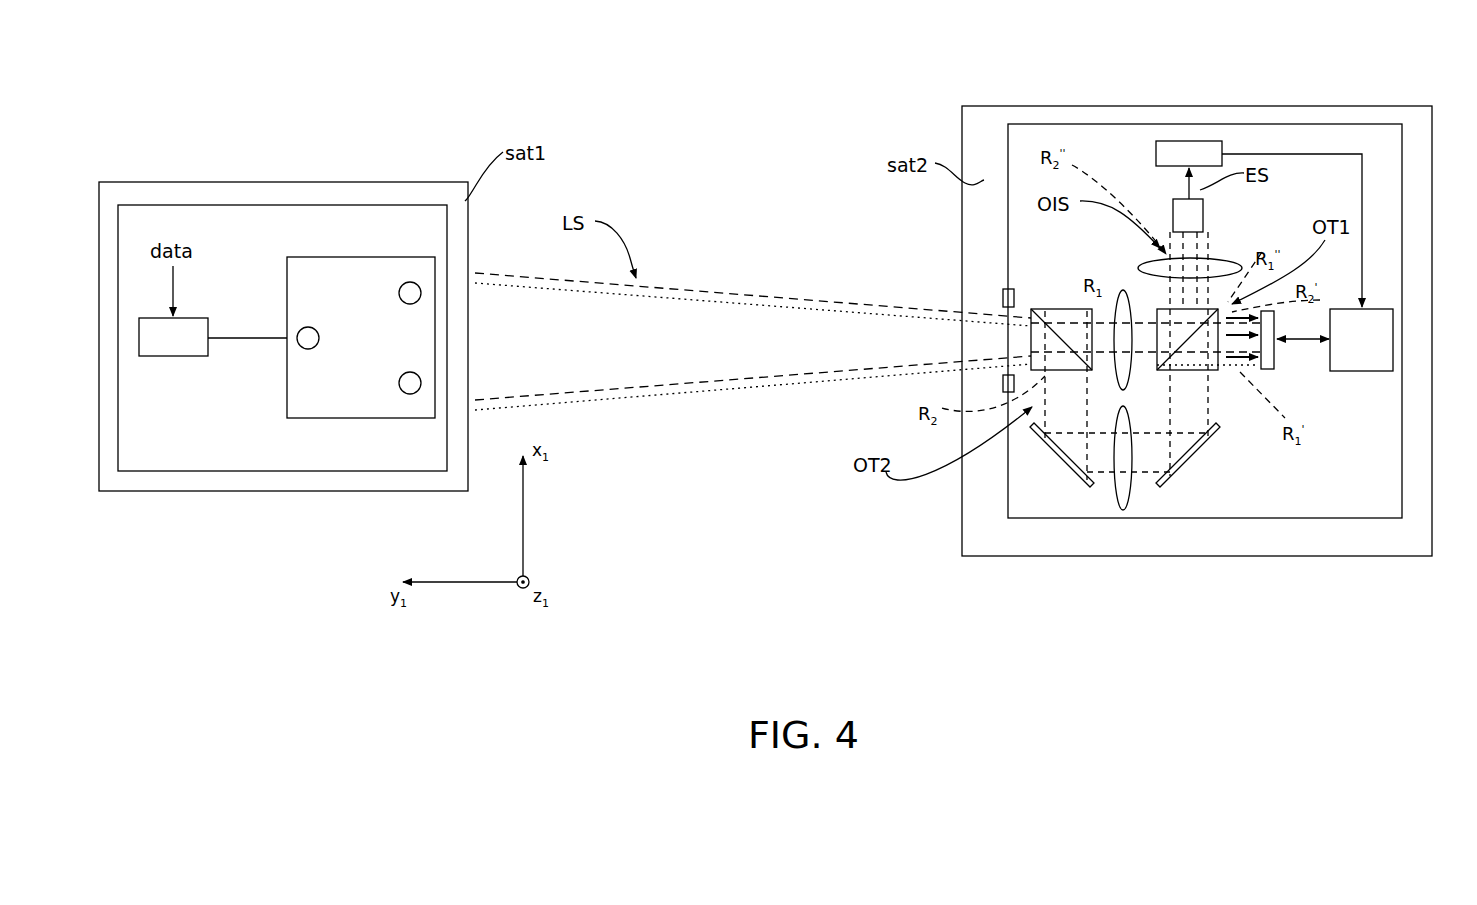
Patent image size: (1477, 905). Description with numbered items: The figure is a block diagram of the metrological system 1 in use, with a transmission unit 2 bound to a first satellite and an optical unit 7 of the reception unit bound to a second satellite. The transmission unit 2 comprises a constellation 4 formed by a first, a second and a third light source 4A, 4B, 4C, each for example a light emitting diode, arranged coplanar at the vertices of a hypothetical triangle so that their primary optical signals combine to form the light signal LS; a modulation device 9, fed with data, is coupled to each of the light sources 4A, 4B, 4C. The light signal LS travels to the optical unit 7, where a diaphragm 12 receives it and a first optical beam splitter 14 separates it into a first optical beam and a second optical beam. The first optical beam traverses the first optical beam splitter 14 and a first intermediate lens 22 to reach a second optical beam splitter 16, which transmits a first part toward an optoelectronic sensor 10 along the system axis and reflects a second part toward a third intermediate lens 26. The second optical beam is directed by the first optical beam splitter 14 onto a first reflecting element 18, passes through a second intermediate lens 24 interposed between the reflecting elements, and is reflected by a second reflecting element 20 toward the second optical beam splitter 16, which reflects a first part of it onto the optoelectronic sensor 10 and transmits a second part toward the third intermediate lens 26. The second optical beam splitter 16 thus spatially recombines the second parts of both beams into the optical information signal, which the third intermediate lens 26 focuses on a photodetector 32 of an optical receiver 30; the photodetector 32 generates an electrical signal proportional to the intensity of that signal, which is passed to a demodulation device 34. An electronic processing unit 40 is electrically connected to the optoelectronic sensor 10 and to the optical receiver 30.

The metrological system 1 is at (905, 106).
The transmission unit 2 is at (228, 474).
The constellation 4 is at (295, 403).
The first light source 4A is at (404, 294).
The second light source 4B is at (405, 388).
The third light source 4C is at (306, 332).
The optical unit 7 is at (1406, 170).
The modulation device 9 is at (150, 347).
The optoelectronic sensor 10 is at (1272, 369).
The diaphragm 12 is at (1002, 298).
The first optical beam splitter 14 is at (1065, 316).
The second optical beam splitter 16 is at (1219, 366).
The first reflecting element 18 is at (1050, 446).
The second reflecting element 20 is at (1195, 450).
The first intermediate lens 22 is at (1124, 292).
The second intermediate lens 24 is at (1117, 488).
The third intermediate lens 26 is at (1205, 266).
The optical receiver 30 is at (1162, 185).
The photodetector 32 is at (1204, 208).
The demodulation device 34 is at (1155, 150).
The electronic processing unit 40 is at (1357, 371).